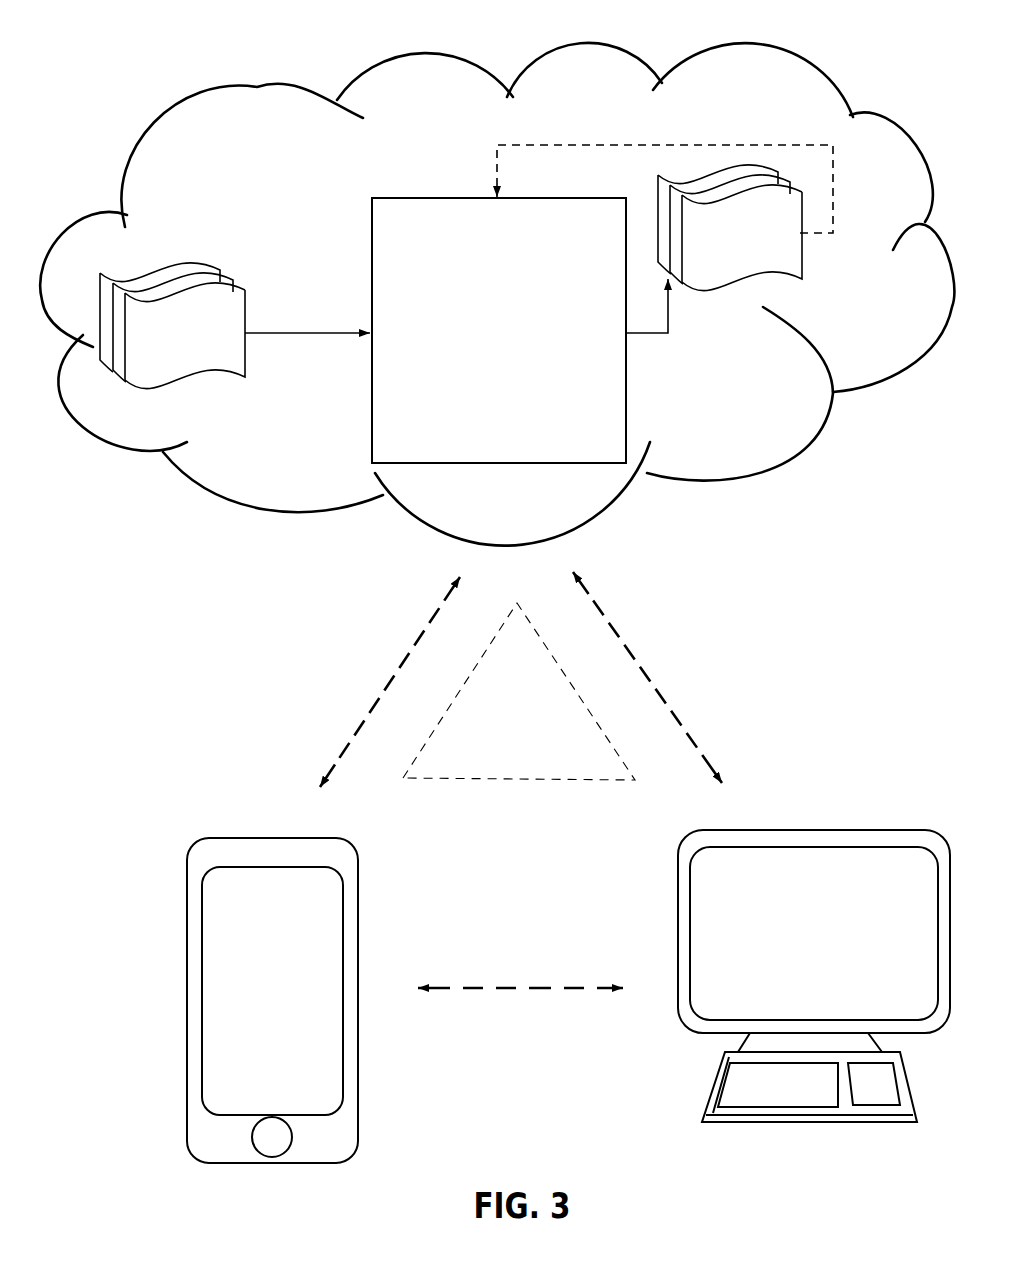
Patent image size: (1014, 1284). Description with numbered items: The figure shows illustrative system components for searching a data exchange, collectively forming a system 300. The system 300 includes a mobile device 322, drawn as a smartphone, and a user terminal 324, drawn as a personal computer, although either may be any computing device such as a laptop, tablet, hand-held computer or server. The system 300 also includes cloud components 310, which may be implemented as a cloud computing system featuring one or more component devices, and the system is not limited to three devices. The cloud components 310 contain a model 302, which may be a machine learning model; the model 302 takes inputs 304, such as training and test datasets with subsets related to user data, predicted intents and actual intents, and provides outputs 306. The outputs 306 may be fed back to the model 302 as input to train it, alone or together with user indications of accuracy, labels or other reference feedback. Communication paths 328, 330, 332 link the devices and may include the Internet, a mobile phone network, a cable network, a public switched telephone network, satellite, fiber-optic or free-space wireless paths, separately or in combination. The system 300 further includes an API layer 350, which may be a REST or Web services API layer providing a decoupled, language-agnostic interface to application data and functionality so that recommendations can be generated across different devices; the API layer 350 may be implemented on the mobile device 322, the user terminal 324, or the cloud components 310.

The system 300 is at (477, 38).
The model 302 is at (480, 346).
The inputs 304 is at (194, 258).
The outputs 306 is at (781, 262).
The cloud components 310 is at (798, 102).
The mobile device 322 is at (262, 817).
The user terminal 324 is at (807, 820).
The communication path 328 is at (343, 667).
The communication path 330 is at (728, 633).
The communication path 332 is at (515, 957).
The API layer 350 is at (499, 717).